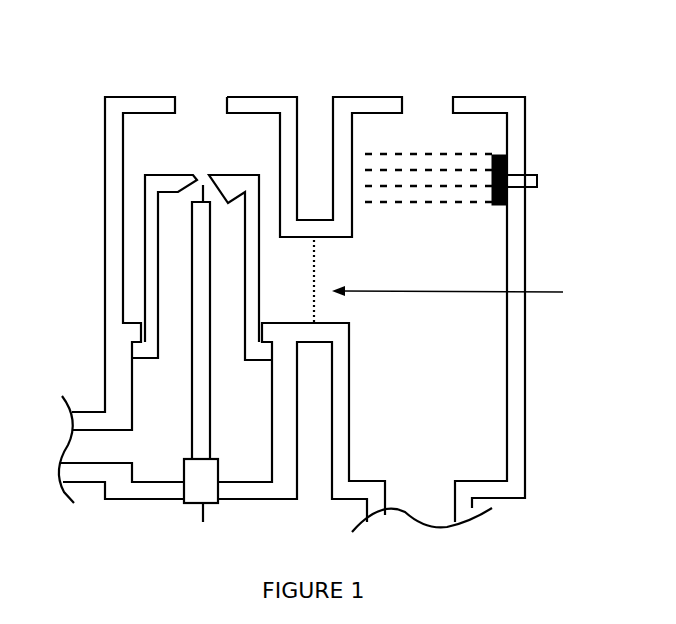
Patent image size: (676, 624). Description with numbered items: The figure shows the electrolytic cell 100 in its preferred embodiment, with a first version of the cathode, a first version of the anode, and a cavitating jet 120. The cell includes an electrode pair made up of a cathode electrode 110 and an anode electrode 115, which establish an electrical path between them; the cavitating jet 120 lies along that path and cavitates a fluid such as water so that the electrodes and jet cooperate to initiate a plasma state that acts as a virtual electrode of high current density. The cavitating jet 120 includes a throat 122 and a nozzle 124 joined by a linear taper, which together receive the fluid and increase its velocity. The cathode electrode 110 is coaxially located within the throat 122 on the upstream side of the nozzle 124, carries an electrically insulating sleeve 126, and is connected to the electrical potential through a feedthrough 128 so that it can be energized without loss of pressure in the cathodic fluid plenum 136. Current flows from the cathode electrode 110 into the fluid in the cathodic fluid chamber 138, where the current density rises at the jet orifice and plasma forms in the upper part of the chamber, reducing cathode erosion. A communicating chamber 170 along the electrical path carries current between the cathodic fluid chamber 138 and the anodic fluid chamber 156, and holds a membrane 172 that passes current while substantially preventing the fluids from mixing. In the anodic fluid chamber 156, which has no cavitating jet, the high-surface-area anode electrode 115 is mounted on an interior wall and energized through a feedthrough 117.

The electrolytic cell 100 is at (505, 55).
The cathode electrode 110 is at (202, 185).
The anode electrode 115 is at (507, 158).
The feedthrough 117 is at (537, 180).
The cavitating jet 120 is at (209, 137).
The throat 122 is at (228, 203).
The nozzle 124 is at (200, 178).
The electrically insulating sleeve 126 is at (211, 404).
The feedthrough 128 is at (200, 490).
The cathodic fluid plenum 136 is at (150, 383).
The cathodic fluid chamber 138 is at (137, 132).
The anodic fluid chamber 156 is at (428, 387).
The communicating chamber 170 is at (563, 292).
The membrane 172 is at (317, 310).